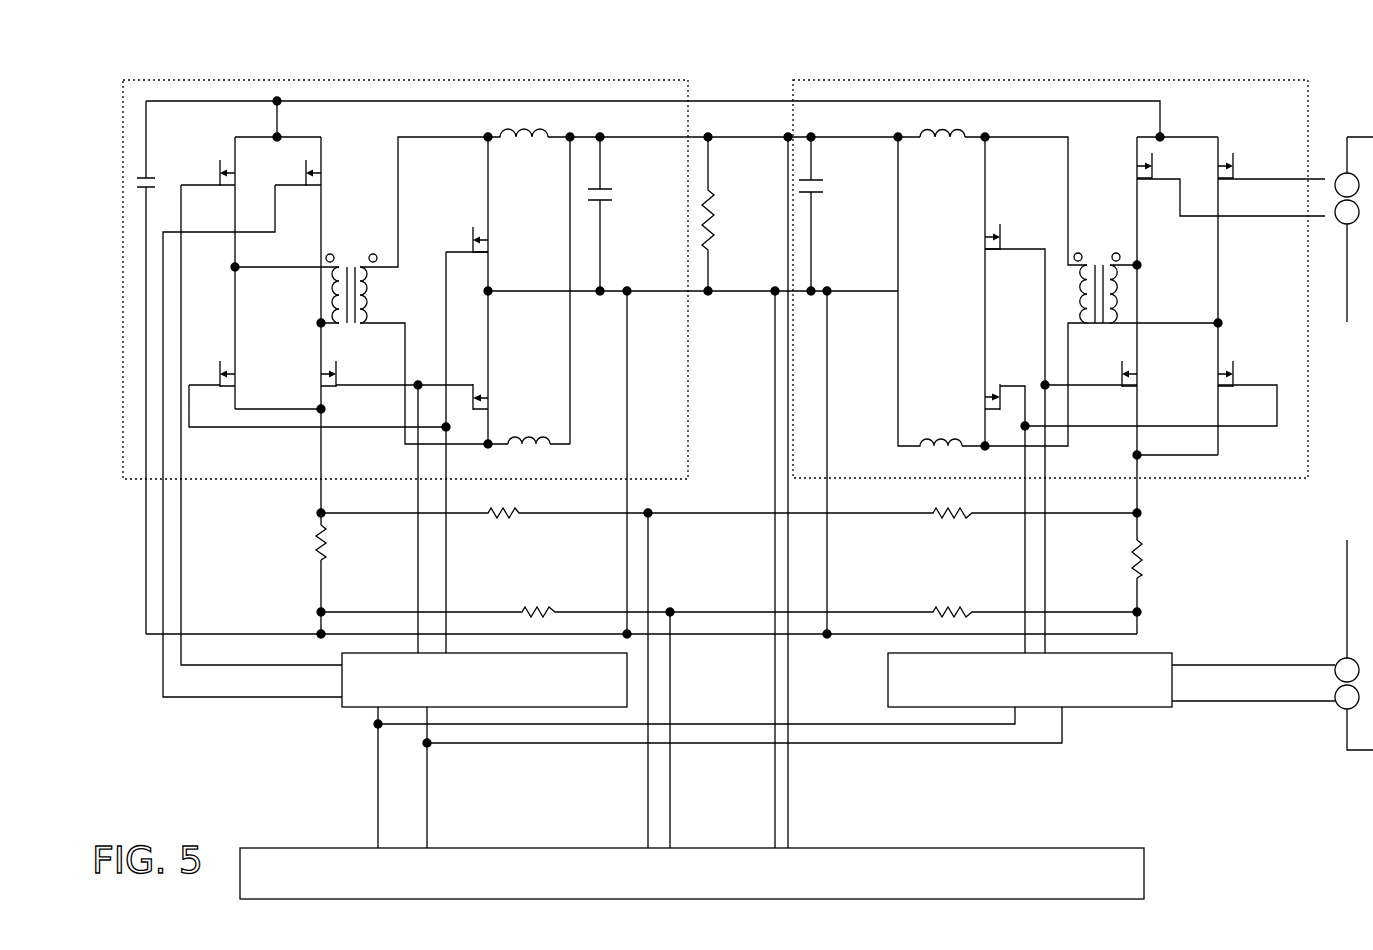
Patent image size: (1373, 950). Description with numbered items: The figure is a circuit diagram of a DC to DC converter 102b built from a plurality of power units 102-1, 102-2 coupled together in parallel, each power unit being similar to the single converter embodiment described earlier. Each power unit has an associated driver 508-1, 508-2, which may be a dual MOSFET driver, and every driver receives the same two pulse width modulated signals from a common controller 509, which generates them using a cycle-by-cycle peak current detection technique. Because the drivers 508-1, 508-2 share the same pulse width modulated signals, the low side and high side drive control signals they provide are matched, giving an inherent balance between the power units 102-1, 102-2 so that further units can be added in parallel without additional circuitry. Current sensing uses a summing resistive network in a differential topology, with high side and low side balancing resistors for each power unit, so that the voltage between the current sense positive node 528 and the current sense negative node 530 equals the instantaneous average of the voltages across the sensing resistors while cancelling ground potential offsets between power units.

The DC to DC converter 102b is at (196, 61).
The power unit 102-1 is at (420, 80).
The power unit 102-2 is at (890, 80).
The CSP node 528 is at (650, 511).
The CSN node 530 is at (672, 610).
The driver 508-1 is at (340, 708).
The driver 508-2 is at (1148, 708).
The controller 509 is at (1144, 860).